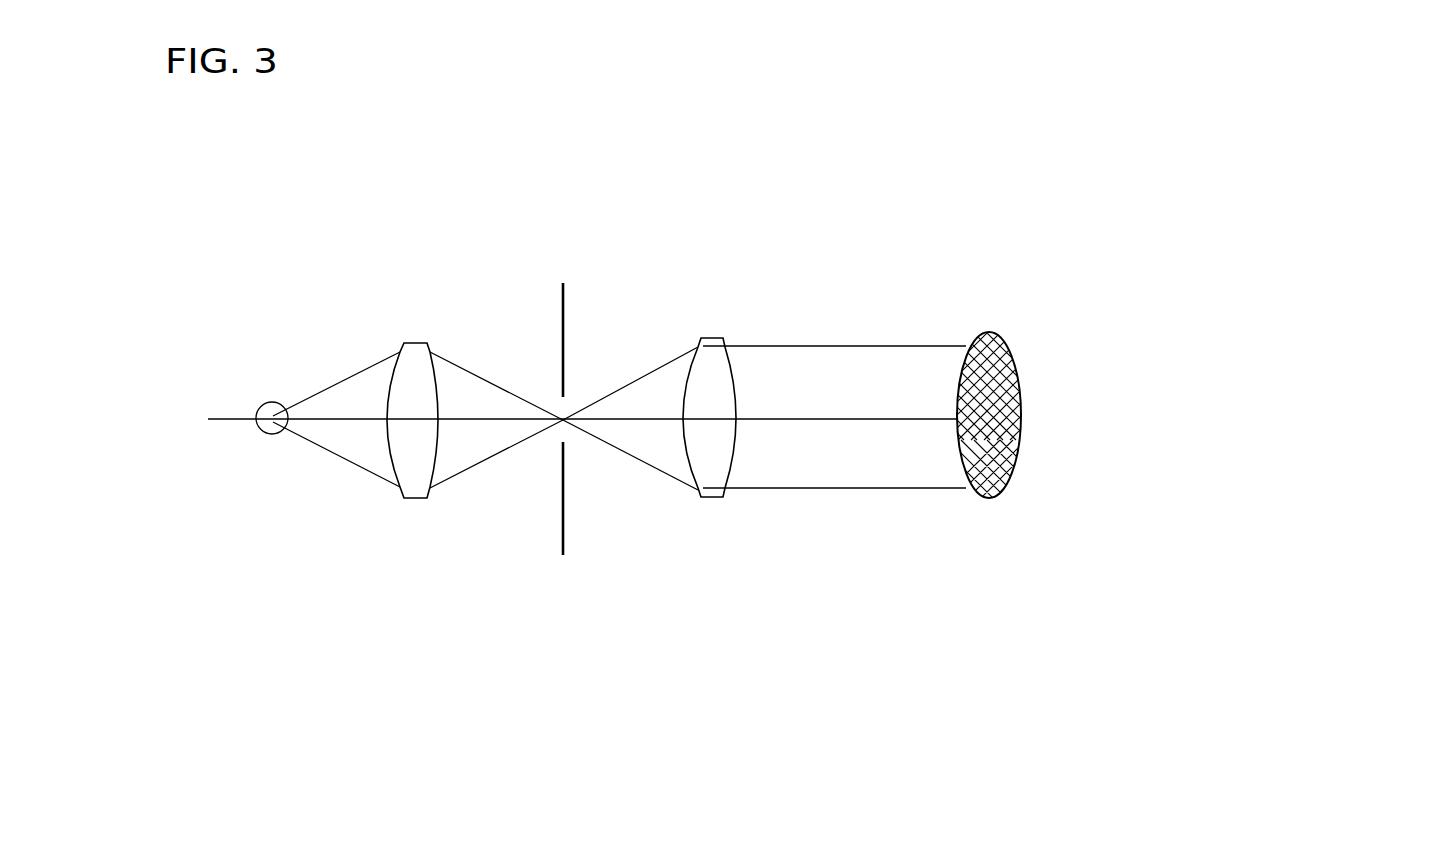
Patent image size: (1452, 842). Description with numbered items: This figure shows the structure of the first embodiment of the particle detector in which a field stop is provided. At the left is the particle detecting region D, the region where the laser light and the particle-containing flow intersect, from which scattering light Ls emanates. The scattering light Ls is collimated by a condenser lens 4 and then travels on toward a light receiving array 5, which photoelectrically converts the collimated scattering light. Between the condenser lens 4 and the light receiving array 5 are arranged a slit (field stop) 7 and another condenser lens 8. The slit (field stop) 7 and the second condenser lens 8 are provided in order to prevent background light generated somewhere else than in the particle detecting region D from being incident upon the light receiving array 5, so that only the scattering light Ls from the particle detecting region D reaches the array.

The condenser lens 4 is at (411, 343).
The light receiving array 5 is at (1008, 350).
The slit (field stop) 7 is at (565, 283).
The condenser lens 8 is at (723, 337).
The particle detecting region D is at (272, 401).
The scattering light Ls is at (343, 455).